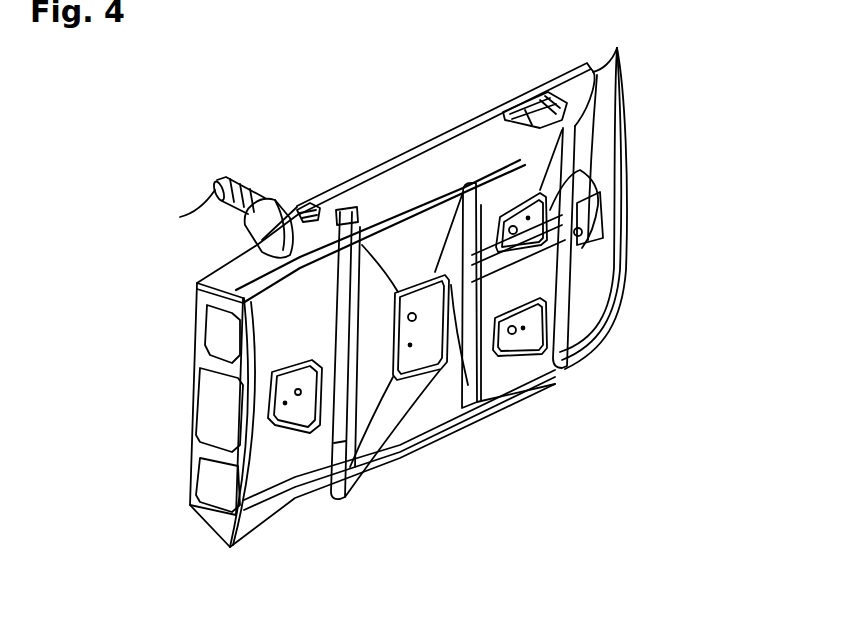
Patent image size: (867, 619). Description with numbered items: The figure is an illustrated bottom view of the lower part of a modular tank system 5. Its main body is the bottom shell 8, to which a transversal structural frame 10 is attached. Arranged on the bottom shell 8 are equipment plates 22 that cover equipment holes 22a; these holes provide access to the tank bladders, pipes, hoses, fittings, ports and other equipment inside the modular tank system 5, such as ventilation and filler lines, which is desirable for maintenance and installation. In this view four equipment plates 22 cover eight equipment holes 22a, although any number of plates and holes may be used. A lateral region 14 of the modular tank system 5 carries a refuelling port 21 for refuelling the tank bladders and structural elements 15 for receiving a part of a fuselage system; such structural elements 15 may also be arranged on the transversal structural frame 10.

The modular tank system 5 is at (165, 148).
The bottom shell 8 is at (608, 222).
The transversal structural frame 10 is at (215, 402).
The lateral region 14 is at (413, 178).
The structural elements 15 is at (336, 208).
The refuelling port 21 is at (217, 213).
The equipment plates 22 is at (536, 213).
The equipment holes 22a is at (556, 200).